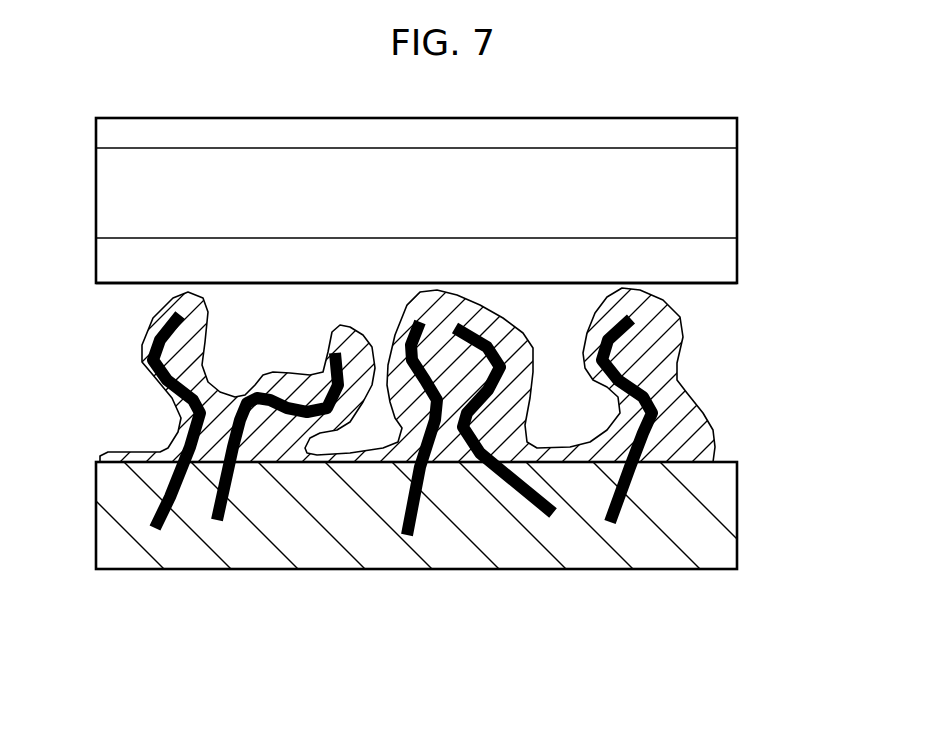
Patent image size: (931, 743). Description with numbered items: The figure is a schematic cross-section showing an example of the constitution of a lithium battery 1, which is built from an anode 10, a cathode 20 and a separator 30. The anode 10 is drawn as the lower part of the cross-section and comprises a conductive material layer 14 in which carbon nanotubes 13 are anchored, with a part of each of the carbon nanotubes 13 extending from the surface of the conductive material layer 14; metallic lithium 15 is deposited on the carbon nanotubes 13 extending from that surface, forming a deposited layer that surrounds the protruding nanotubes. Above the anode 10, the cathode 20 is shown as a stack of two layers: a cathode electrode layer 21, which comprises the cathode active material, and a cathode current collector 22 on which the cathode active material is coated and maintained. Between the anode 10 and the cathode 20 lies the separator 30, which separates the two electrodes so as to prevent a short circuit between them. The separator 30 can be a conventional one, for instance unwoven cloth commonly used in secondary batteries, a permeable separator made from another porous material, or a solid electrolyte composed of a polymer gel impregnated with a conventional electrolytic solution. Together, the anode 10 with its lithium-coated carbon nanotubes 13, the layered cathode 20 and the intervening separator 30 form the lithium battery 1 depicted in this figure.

The lithium battery 1 is at (538, 617).
The anode 10 is at (85, 569).
The carbon nanotubes 13 is at (331, 369).
The conductive material layer 14 is at (717, 503).
The metallic lithium 15 is at (660, 338).
The cathode 20 is at (85, 120).
The cathode electrode layer 21 is at (723, 193).
The cathode current collector 22 is at (723, 139).
The separator 30 is at (723, 264).